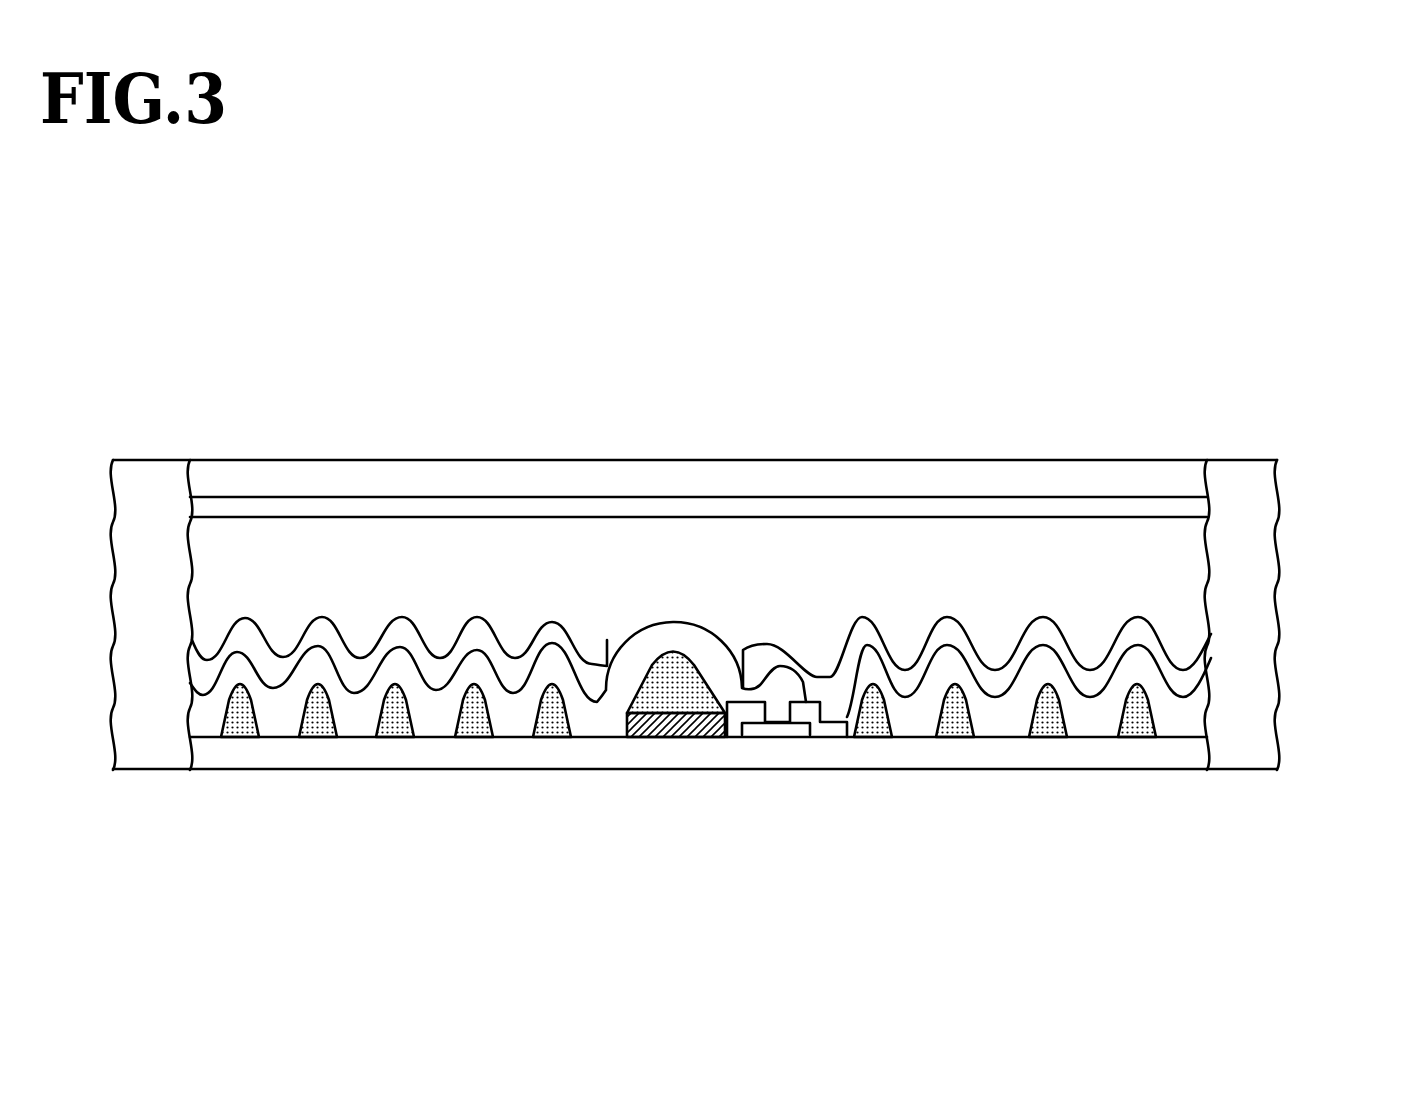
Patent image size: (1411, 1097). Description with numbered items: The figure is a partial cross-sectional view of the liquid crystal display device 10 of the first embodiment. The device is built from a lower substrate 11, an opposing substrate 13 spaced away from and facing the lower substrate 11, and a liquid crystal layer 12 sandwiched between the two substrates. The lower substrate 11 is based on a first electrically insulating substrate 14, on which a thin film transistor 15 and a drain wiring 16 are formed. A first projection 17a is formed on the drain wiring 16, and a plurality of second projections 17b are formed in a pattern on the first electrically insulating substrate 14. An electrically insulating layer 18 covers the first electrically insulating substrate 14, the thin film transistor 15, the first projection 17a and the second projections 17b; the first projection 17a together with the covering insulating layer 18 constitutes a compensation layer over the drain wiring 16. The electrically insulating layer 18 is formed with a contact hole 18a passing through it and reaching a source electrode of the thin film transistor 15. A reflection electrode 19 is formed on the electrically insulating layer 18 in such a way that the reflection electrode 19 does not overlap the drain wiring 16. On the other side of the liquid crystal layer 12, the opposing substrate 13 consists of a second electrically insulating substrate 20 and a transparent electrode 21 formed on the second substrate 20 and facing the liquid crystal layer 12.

The liquid crystal display device 10 is at (290, 385).
The lower substrate 11 is at (1313, 615).
The liquid crystal layer 12 is at (988, 549).
The opposing substrate 13 is at (1315, 458).
The first electrically insulating substrate 14 is at (1093, 755).
The thin film transistor 15 is at (850, 783).
The drain wiring 16 is at (663, 738).
The first projection 17a is at (692, 647).
The second projections 17b is at (365, 712).
The electrically insulating layer 18 is at (515, 722).
The contact hole 18a is at (800, 673).
The reflection electrode 19 is at (472, 636).
The second electrically insulating substrate 20 is at (768, 474).
The transparent electrode 21 is at (1063, 508).